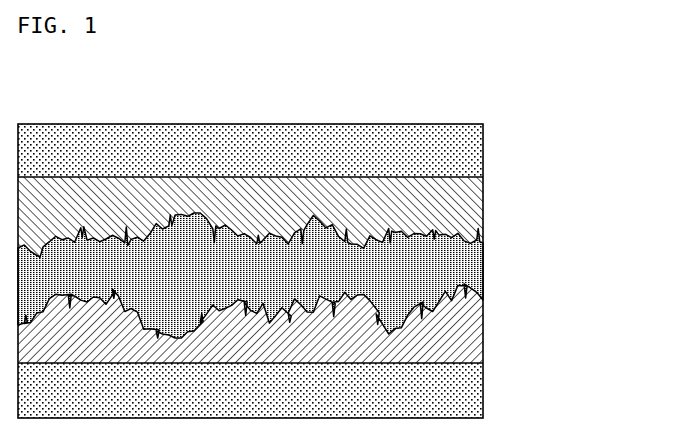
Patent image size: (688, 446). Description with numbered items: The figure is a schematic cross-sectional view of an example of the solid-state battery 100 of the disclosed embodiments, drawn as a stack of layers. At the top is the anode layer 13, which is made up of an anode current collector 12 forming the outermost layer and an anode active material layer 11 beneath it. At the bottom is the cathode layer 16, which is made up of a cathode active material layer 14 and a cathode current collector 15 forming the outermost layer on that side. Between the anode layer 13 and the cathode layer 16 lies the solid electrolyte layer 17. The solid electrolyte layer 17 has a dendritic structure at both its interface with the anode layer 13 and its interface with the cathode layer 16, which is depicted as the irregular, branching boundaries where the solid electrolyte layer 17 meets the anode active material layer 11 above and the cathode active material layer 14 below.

The solid-state battery 100 is at (109, 113).
The anode current collector 12 is at (477, 143).
The anode active material layer 11 is at (291, 220).
The anode layer 13 is at (323, 193).
The solid electrolyte layer 17 is at (477, 253).
The cathode active material layer 14 is at (477, 333).
The cathode current collector 15 is at (291, 390).
The cathode layer 16 is at (323, 343).